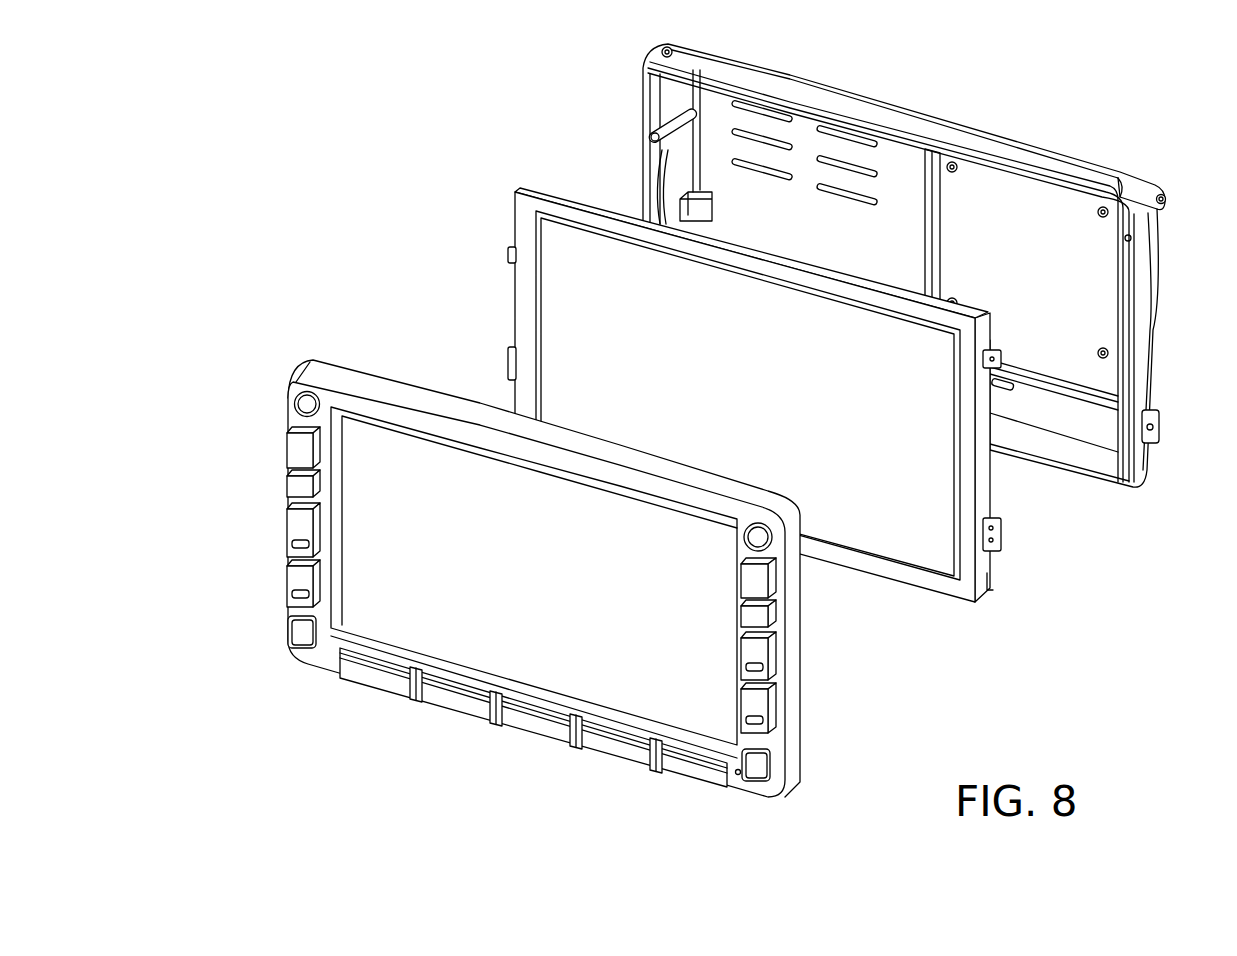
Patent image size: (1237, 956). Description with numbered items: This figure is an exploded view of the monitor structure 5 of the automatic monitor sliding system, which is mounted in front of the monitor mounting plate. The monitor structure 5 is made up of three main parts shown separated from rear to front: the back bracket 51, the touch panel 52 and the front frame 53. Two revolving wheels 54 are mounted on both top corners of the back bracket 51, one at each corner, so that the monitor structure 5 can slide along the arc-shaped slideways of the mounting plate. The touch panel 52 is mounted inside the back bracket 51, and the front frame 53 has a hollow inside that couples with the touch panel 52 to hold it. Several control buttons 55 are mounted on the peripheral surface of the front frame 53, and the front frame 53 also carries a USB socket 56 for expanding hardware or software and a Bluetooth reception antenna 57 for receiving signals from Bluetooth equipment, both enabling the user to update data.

The monitor structure 5 is at (404, 196).
The back bracket 51 is at (920, 128).
The touch panel 52 is at (528, 284).
The front frame 53 is at (320, 372).
The revolving wheels 54 is at (660, 53).
The control buttons 55 is at (297, 531).
The USB socket 56 is at (762, 769).
The Bluetooth reception antenna 57 is at (302, 637).